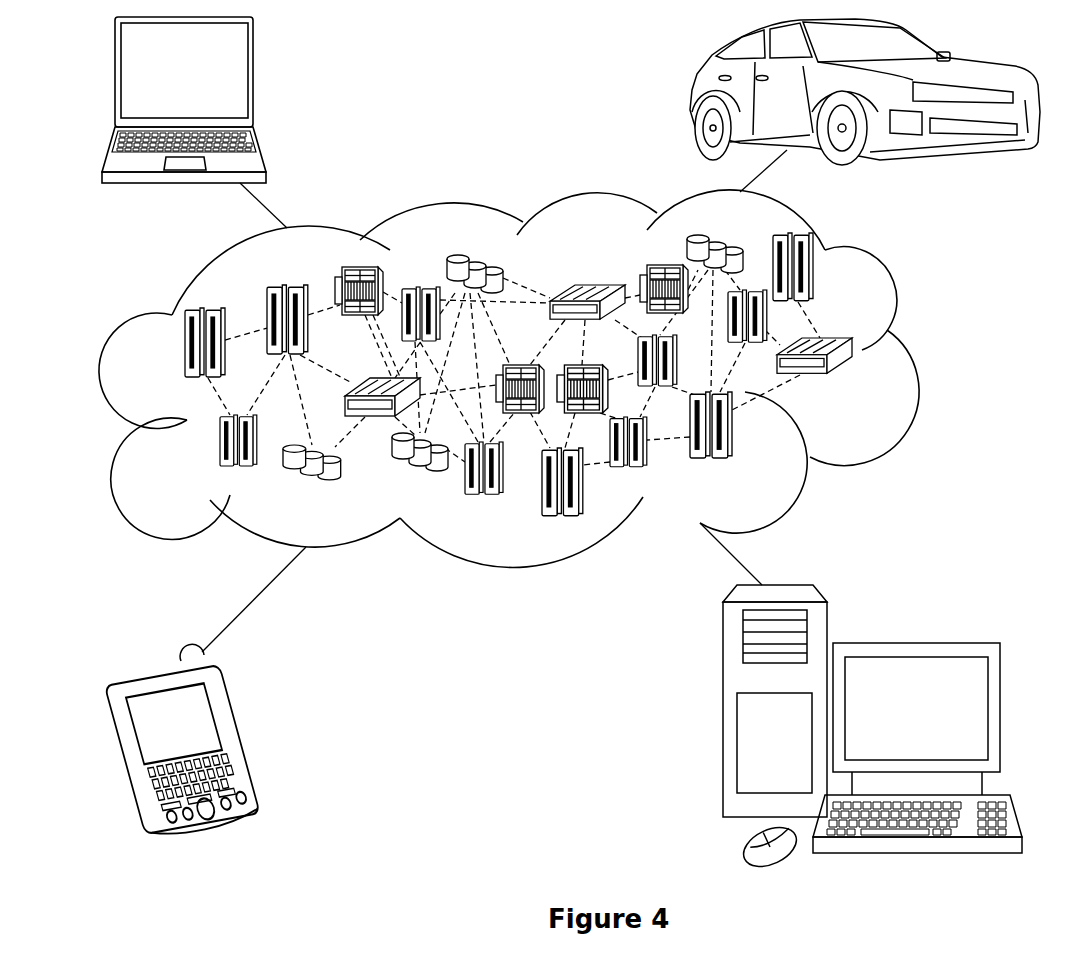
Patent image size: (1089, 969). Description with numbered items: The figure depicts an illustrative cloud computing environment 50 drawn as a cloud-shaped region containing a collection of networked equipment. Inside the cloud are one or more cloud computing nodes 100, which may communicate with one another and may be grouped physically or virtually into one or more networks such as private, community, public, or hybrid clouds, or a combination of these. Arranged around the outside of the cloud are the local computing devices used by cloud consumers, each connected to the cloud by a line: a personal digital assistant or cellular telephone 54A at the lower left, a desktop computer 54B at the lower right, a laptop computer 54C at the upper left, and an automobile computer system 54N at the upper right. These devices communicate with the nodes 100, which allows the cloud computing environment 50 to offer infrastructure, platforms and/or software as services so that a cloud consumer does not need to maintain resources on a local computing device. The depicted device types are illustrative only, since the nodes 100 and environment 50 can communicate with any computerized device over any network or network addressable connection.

The cloud computing environment 50 is at (913, 355).
The cloud computing nodes 100 is at (858, 385).
The personal digital assistant or cellular telephone 54A is at (242, 737).
The desktop computer 54B is at (912, 643).
The laptop computer 54C is at (253, 80).
The automobile computer system 54N is at (695, 97).